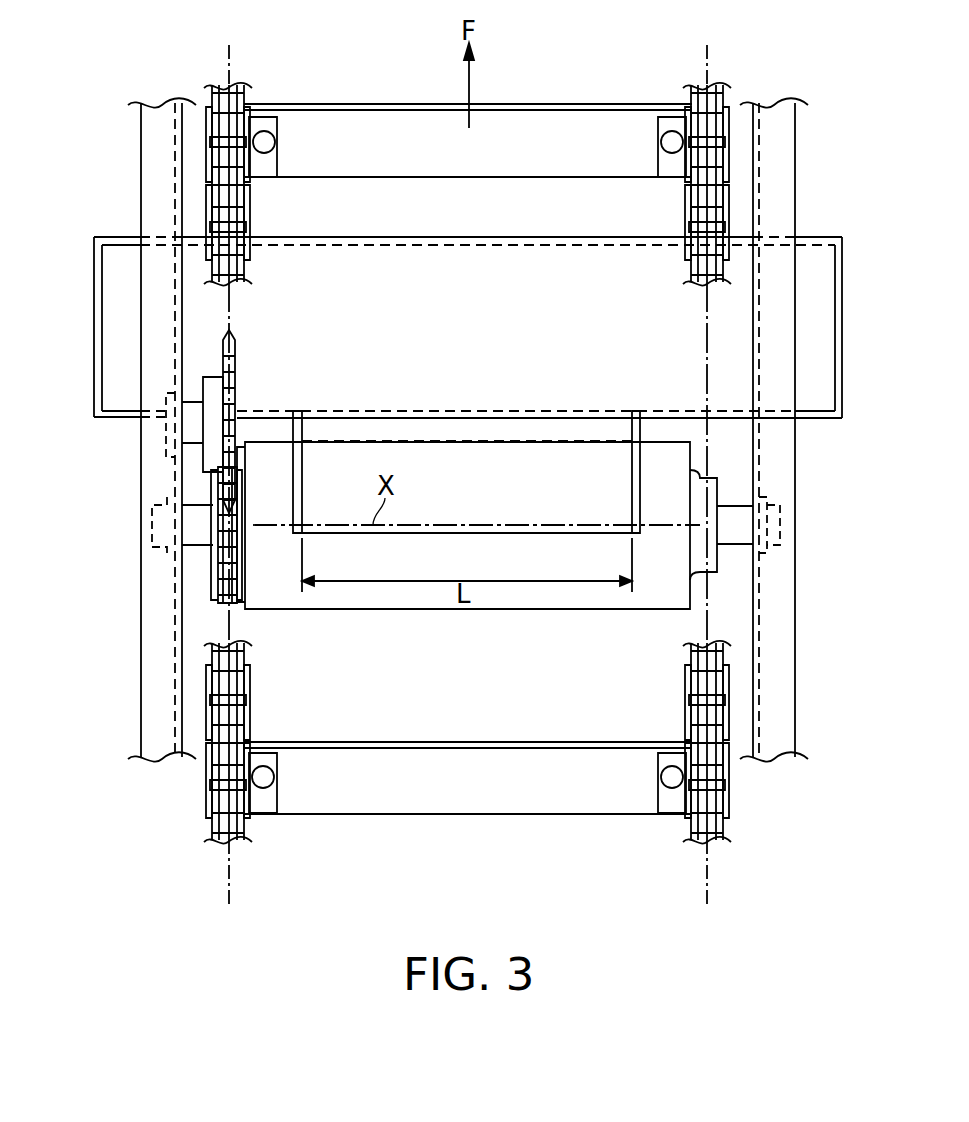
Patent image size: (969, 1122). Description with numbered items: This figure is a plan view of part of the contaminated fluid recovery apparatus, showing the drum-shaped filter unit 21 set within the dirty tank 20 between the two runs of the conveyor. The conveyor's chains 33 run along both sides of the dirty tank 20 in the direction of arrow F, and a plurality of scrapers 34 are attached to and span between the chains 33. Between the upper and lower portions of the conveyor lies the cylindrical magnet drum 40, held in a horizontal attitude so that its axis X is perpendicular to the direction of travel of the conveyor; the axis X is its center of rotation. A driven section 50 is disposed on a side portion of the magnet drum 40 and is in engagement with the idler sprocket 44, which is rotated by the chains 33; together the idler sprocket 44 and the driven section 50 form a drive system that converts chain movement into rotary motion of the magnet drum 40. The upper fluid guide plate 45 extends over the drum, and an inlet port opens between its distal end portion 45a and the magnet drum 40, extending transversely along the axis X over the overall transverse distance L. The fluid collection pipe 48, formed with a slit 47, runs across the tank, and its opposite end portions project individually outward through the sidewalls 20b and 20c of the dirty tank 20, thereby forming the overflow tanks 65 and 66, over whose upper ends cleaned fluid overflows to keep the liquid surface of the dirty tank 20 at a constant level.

The dirty tank 20 is at (192, 620).
The sidewall 20b is at (760, 470).
The sidewall 20c is at (175, 568).
The drum-shaped filter unit 21 is at (537, 624).
The chains 33 is at (210, 128).
The scrapers 34 is at (593, 123).
The magnet drum 40 is at (393, 612).
The idler sprocket 44 is at (228, 364).
The upper fluid guide plate 45 is at (540, 460).
The distal end portion 45a is at (497, 533).
The slit 47 is at (452, 410).
The fluid collection pipe 48 is at (445, 238).
The driven section 50 is at (215, 537).
The overflow tank 65 is at (825, 238).
The overflow tank 66 is at (122, 237).